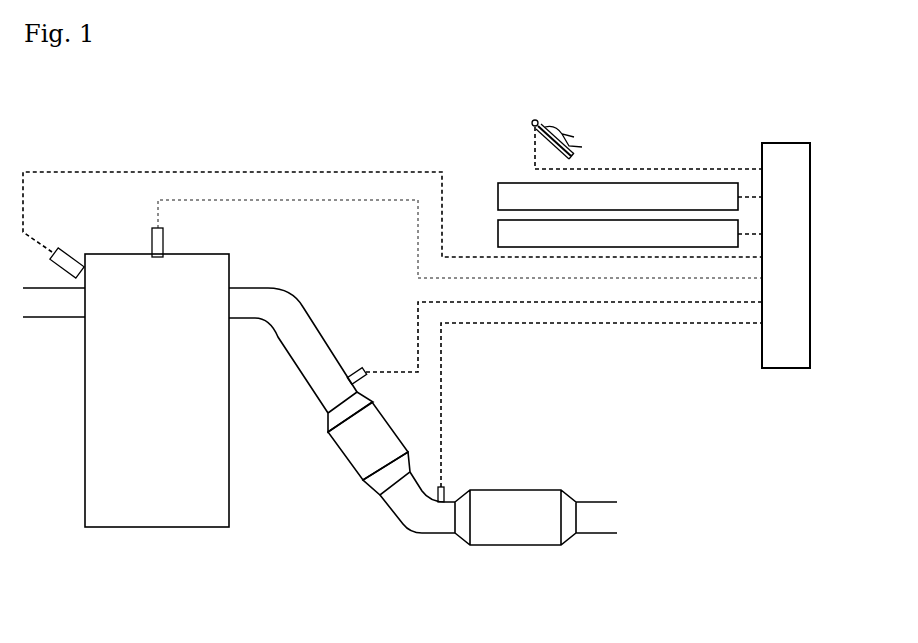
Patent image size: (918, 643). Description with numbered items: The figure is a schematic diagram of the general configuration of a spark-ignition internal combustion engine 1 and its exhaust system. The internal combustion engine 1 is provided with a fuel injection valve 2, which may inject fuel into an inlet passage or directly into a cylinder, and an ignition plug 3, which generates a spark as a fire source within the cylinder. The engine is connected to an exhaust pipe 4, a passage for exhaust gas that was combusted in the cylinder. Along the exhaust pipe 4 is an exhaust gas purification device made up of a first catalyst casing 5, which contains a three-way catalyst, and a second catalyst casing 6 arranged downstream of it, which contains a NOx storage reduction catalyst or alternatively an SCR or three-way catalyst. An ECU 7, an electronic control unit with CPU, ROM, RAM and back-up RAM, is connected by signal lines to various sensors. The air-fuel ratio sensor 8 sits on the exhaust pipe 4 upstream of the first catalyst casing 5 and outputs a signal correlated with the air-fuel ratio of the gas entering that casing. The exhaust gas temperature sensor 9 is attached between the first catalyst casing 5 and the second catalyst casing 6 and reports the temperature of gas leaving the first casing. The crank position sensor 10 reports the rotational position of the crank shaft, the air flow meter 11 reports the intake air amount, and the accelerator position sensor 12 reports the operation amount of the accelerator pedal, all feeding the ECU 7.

The internal combustion engine 1 is at (85, 462).
The fuel injection valve 2 is at (70, 256).
The ignition plug 3 is at (165, 242).
The exhaust pipe 4 is at (280, 290).
The first catalyst casing 5 is at (345, 460).
The second catalyst casing 6 is at (504, 546).
The ECU 7 is at (810, 202).
The air-fuel ratio sensor 8 is at (366, 378).
The exhaust gas temperature sensor 9 is at (447, 490).
The crank position sensor 10 is at (498, 203).
The air flow meter 11 is at (498, 238).
The accelerator position sensor 12 is at (531, 120).